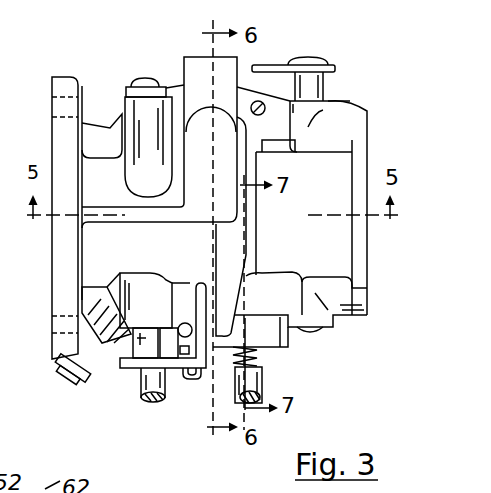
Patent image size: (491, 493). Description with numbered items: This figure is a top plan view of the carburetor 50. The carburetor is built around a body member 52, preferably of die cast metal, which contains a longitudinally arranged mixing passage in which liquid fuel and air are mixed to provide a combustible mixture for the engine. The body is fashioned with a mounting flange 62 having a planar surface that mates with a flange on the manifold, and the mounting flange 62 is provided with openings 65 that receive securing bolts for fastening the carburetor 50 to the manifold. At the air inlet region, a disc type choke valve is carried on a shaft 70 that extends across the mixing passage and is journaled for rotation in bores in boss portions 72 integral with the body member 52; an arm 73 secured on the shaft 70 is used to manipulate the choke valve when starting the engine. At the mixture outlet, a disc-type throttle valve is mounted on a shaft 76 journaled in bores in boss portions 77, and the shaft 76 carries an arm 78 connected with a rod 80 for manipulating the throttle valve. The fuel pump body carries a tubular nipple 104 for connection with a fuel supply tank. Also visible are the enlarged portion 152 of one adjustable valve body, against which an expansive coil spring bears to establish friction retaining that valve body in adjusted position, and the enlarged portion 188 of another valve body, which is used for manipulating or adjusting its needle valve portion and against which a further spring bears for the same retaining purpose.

The carburetor 50 is at (344, 56).
The body member 52 is at (200, 117).
The mounting flange 62 is at (63, 76).
The openings 65 is at (72, 107).
The shaft 70 is at (322, 91).
The boss portions 72 is at (330, 101).
The arm 73 is at (270, 64).
The shaft 76 is at (137, 342).
The boss portions 77 is at (118, 99).
The arm 78 is at (172, 401).
The rod 80 is at (182, 379).
The tubular nipple 104 is at (58, 364).
The enlarged portion 152 is at (263, 382).
The enlarged portion 188 is at (143, 397).